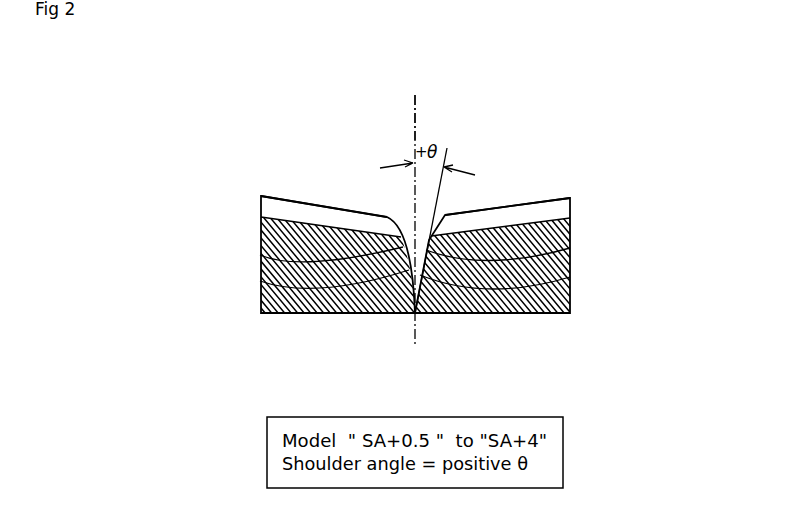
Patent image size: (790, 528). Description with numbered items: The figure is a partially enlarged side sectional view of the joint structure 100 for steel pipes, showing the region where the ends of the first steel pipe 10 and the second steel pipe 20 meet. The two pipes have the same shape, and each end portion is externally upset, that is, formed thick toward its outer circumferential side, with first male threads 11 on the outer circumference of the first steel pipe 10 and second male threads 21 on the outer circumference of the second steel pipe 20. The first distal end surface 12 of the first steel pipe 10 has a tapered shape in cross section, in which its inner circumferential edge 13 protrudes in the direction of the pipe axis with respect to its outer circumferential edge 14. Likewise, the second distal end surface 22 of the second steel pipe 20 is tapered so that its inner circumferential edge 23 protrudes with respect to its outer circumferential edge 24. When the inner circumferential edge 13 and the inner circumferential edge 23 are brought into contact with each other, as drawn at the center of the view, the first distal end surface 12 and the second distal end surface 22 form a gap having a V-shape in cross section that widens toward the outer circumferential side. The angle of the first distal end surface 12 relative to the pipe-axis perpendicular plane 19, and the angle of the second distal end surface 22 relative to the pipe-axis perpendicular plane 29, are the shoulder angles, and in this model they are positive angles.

The joint structure 100 is at (187, 138).
The first steel pipe 10 is at (260, 228).
The first male threads 11 is at (287, 210).
The first distal end surface 12 is at (260, 282).
The inner circumferential edge 13 is at (415, 313).
The outer circumferential edge 14 is at (260, 255).
The pipe-axis perpendicular plane 19 is at (415, 130).
The pipe-axis perpendicular plane 29 is at (416, 110).
The second steel pipe 20 is at (570, 233).
The second male threads 21 is at (527, 213).
The second distal end surface 22 is at (570, 278).
The inner circumferential edge 23 is at (415, 313).
The outer circumferential edge 24 is at (570, 252).